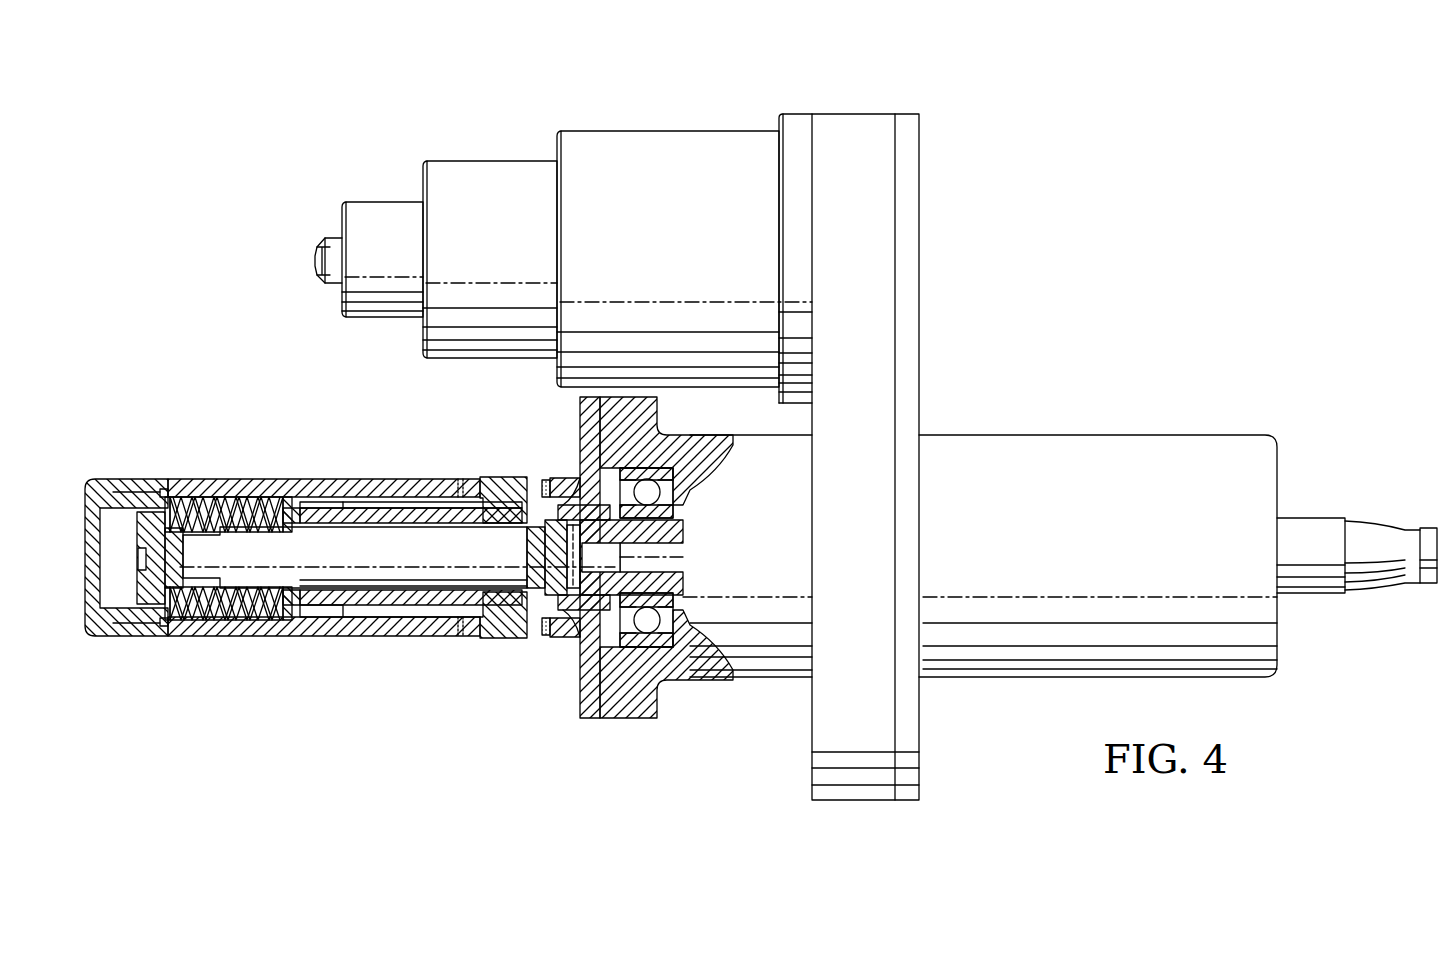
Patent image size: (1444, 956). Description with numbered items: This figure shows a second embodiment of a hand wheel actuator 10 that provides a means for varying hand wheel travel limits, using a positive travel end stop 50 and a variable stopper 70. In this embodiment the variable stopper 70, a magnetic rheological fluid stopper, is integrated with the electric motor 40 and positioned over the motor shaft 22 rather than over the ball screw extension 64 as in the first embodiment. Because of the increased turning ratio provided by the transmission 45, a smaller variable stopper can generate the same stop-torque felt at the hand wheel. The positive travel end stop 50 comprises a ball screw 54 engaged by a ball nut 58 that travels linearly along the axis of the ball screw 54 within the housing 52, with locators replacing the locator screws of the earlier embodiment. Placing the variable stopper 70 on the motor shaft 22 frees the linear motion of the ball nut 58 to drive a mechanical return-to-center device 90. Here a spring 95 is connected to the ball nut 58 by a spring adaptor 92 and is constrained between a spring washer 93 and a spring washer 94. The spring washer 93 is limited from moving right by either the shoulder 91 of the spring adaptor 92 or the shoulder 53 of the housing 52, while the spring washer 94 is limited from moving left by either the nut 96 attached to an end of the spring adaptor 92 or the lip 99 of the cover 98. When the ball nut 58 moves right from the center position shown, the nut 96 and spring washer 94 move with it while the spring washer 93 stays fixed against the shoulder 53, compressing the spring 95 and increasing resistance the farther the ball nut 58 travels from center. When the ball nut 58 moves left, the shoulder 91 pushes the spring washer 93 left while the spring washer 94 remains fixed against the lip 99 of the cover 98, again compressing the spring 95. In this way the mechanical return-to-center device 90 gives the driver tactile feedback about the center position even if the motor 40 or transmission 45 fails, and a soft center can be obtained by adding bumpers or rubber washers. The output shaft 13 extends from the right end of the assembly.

The hand wheel actuator 10 is at (1183, 237).
The output shaft 13 is at (1325, 525).
The motor shaft 22 is at (330, 240).
The electric motor 40 is at (695, 140).
The transmission 45 is at (922, 300).
The positive travel end stop 50 is at (383, 470).
The housing 52 is at (430, 640).
The shoulder 53 is at (287, 497).
The ball screw 54 is at (345, 597).
The ball nut 58 is at (385, 600).
The ball screw extension 64 is at (285, 548).
The variable stopper 70 is at (385, 210).
The mechanical return-to-center device 90 is at (222, 437).
The shoulder 91 is at (283, 600).
The spring adaptor 92 is at (320, 608).
The spring washer 93 is at (270, 613).
The spring washer 94 is at (166, 617).
The spring 95 is at (227, 612).
The nut 96 is at (150, 497).
The cover 98 is at (92, 480).
The lip 99 is at (166, 612).